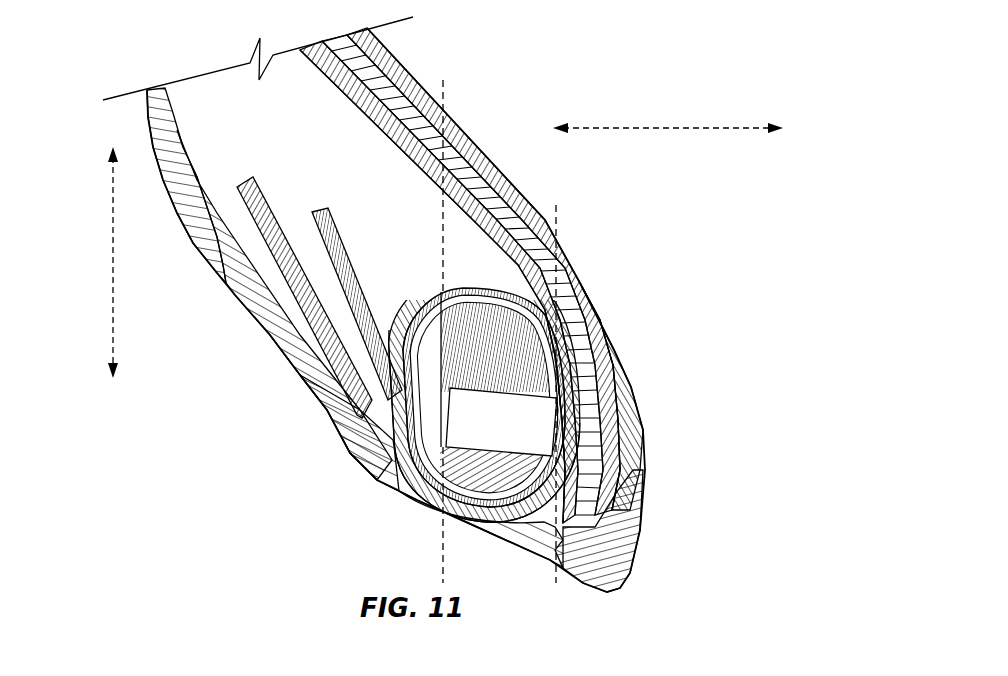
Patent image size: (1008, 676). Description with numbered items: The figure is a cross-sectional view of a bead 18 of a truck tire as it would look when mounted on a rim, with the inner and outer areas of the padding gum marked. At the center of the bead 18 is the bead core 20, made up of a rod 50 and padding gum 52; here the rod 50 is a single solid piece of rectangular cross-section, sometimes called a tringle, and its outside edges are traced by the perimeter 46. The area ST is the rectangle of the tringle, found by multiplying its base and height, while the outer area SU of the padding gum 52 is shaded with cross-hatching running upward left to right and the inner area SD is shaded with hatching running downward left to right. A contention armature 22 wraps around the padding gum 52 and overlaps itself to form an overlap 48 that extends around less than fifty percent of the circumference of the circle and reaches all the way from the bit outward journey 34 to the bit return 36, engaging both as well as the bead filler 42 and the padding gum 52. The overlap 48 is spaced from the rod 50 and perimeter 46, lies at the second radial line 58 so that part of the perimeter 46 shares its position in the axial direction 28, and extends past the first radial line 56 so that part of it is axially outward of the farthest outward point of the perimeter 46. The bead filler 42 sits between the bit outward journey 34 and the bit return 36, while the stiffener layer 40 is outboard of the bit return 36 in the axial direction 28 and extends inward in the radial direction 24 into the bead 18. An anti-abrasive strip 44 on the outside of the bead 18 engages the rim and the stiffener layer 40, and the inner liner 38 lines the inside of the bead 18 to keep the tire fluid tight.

The bead 18 is at (537, 48).
The bead core 20 is at (430, 402).
The contention armature 22 is at (395, 475).
The radial direction 24 is at (113, 262).
The axial direction 28 is at (668, 128).
The bit outward journey 34 is at (517, 205).
The bit return 36 is at (362, 308).
The inner liner 38 is at (577, 283).
The stiffener layer 40 is at (317, 300).
The bead filler 42 is at (373, 241).
The anti-abrasive strip 44 is at (393, 483).
The perimeter 46 is at (548, 453).
The overlap 48 is at (433, 296).
The rod 50 is at (542, 421).
The padding gum 52 is at (435, 422).
The first radial line 56 is at (443, 88).
The second radial line 58 is at (557, 226).
The outer area SU is at (507, 360).
The area of the tringle ST is at (486, 437).
The inner area SD is at (512, 472).